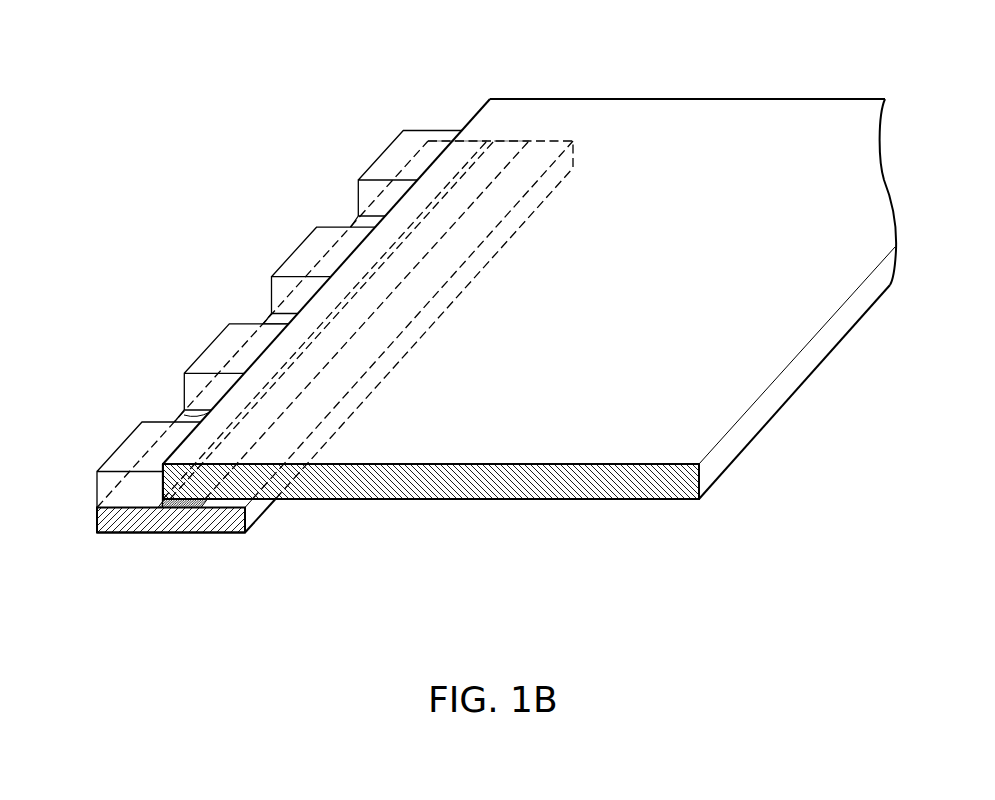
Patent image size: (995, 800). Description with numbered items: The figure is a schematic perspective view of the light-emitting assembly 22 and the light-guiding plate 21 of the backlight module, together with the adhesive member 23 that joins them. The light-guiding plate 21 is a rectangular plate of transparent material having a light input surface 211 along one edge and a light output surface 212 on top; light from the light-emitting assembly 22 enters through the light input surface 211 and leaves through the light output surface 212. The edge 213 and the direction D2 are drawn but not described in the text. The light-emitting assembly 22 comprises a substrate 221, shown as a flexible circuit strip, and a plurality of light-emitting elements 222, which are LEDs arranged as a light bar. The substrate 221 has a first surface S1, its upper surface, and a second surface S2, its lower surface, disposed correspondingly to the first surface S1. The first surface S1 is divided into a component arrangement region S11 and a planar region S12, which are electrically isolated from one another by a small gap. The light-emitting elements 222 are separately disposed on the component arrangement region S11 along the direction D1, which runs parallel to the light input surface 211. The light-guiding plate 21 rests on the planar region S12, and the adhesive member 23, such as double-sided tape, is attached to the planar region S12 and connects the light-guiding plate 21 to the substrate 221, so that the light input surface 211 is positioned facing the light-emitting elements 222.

The light-guiding plate 21 is at (818, 116).
The light input surface 211 is at (183, 413).
The light output surface 212 is at (770, 352).
The edge of substrate 213 is at (763, 403).
The light-emitting assembly 22 is at (60, 417).
The substrate 221 is at (107, 521).
The light-emitting elements 222 is at (312, 224).
The adhesive member 23 is at (183, 507).
The first surface S1 is at (264, 310).
The second surface S2 is at (153, 542).
The component arrangement region S11 is at (434, 144).
The planar region S12 is at (512, 144).
The direction D1 is at (725, 557).
The second direction D2 is at (725, 557).